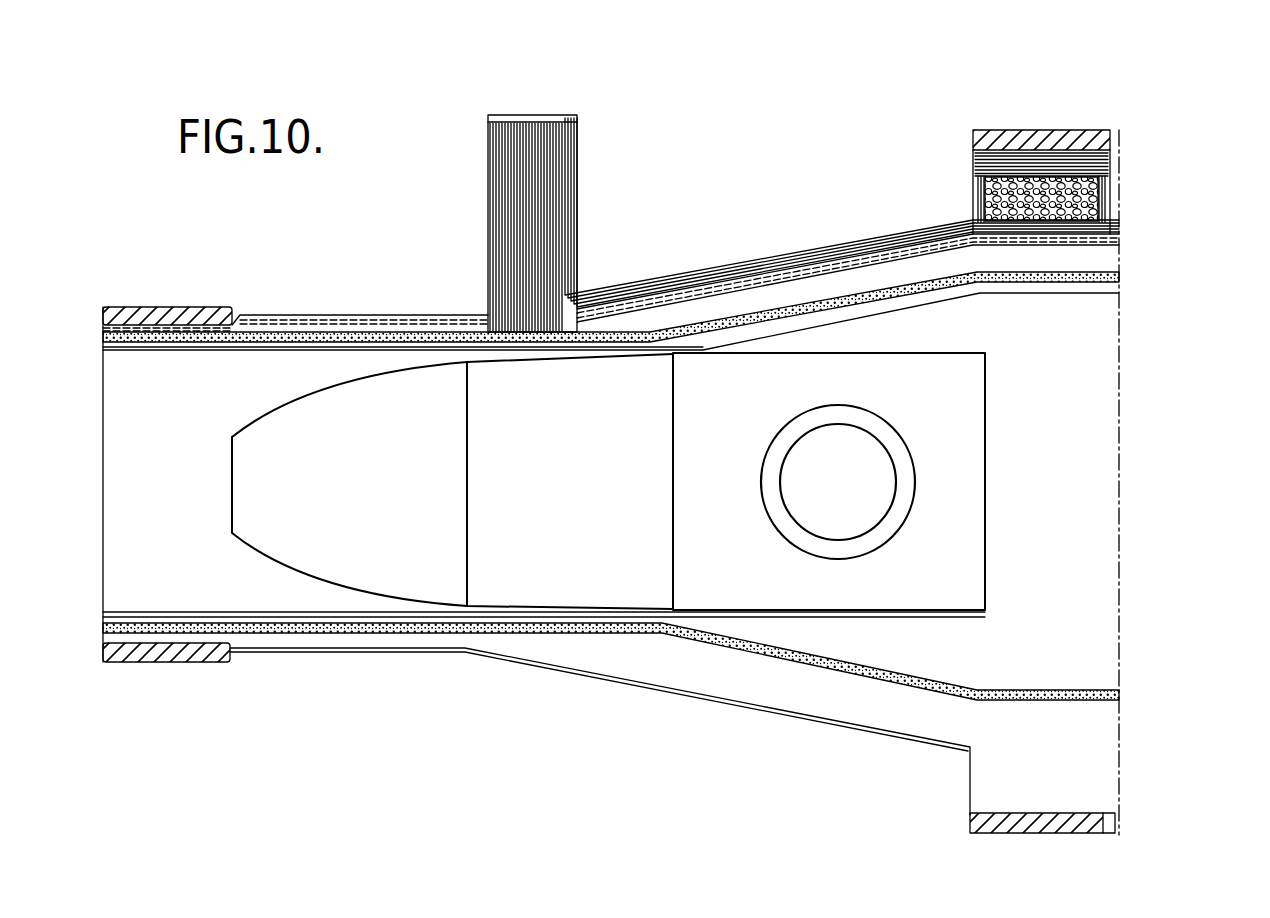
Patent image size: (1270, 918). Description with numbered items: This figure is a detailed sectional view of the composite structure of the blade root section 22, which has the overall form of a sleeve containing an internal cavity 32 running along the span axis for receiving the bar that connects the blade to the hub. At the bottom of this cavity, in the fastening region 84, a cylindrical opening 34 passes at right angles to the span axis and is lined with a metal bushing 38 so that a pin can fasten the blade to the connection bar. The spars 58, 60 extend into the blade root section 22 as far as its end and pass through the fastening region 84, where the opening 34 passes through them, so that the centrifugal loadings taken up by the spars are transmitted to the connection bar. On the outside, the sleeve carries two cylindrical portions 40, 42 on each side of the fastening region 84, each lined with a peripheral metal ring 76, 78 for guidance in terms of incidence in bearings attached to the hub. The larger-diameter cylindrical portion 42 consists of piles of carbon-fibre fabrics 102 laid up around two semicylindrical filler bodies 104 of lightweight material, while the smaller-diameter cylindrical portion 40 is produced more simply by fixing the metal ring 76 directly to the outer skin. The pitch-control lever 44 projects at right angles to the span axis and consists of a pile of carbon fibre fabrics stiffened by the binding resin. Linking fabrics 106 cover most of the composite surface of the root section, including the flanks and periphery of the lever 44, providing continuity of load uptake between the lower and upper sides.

The blade root section 22 is at (643, 740).
The internal cavity 32 is at (535, 552).
The cylindrical opening 34 is at (838, 478).
The metal bushing 38 is at (790, 433).
The cylindrical portion 40 is at (155, 662).
The cylindrical portion 42 is at (1033, 825).
The pitch-control lever 44 is at (527, 163).
The spar 58 is at (611, 478).
The spar 60 is at (755, 315).
The metal ring 76 is at (157, 317).
The metal ring 78 is at (1080, 140).
The fastening region 84 is at (965, 134).
The carbon-fibre fabrics 102 is at (1117, 205).
The filler body 104 is at (1047, 195).
The linking fabrics 106 is at (528, 115).